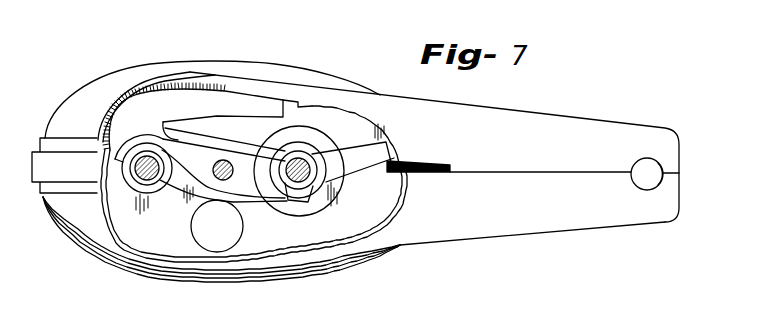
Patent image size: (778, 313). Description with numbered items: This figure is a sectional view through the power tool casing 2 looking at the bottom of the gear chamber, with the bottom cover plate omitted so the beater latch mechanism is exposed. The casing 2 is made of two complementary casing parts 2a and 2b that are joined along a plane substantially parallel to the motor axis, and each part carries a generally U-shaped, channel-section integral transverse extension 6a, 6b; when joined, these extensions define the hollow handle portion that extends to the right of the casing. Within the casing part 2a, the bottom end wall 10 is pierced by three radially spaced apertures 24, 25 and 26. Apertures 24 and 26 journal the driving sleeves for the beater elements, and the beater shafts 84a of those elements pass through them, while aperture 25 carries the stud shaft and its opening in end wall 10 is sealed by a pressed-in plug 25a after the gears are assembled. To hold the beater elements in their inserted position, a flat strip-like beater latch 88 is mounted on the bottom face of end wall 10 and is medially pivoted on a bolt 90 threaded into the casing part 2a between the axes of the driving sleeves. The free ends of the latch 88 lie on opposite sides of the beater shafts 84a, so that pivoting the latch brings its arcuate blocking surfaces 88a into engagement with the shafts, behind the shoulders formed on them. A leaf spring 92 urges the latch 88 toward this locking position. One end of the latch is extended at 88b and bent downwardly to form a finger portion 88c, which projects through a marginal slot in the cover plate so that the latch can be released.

The casing 2 is at (329, 70).
The casing part 2a is at (80, 247).
The casing part 2b is at (143, 67).
The transverse extension 6a is at (554, 236).
The transverse extension 6b is at (593, 119).
The bottom end wall 10 is at (374, 207).
The aperture 24 is at (135, 191).
The aperture 25 is at (191, 231).
The plug 25a is at (200, 250).
The aperture 26 is at (337, 150).
The beater shaft 84a is at (148, 168).
The beater latch 88 is at (261, 154).
The arcuate blocking surface 88a is at (150, 135).
The extended end 88b is at (384, 144).
The finger portion 88c is at (424, 162).
The bolt 90 is at (214, 165).
The leaf spring 92 is at (214, 132).